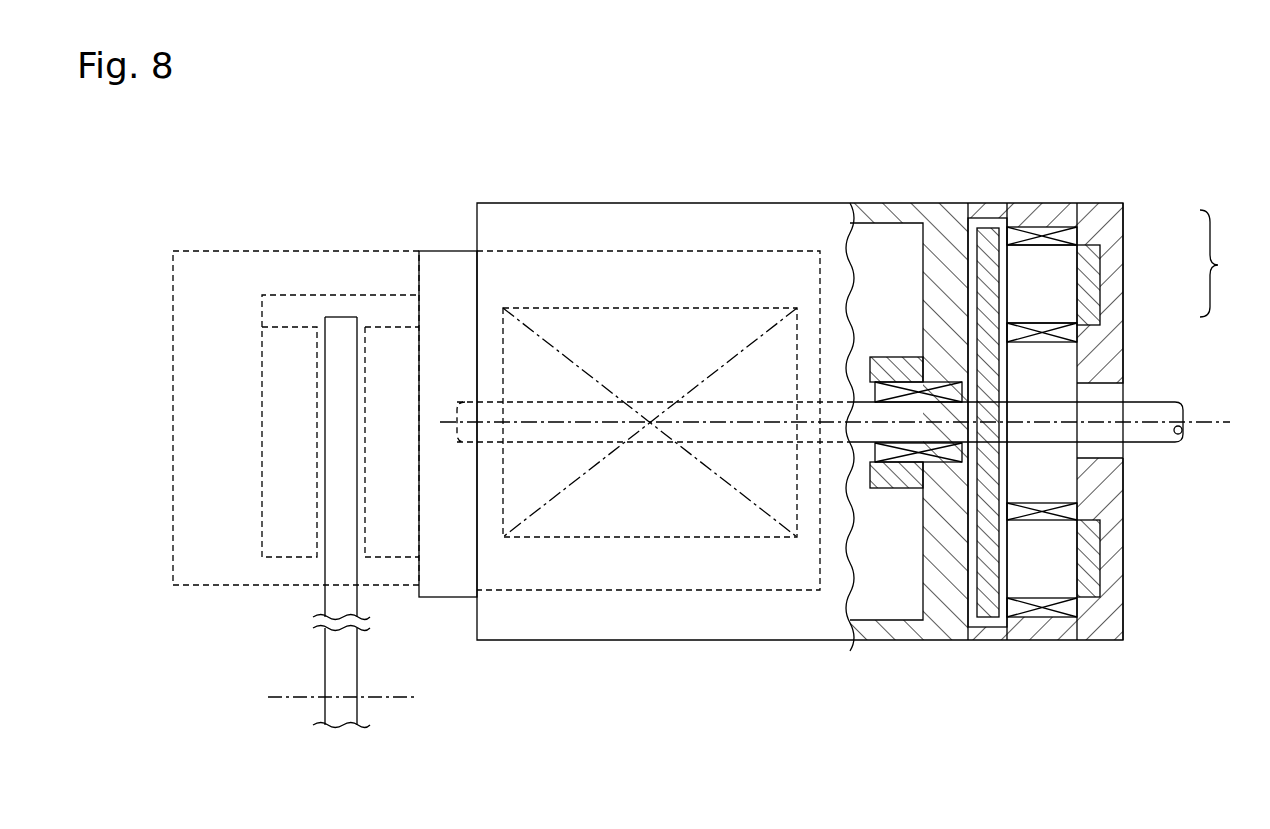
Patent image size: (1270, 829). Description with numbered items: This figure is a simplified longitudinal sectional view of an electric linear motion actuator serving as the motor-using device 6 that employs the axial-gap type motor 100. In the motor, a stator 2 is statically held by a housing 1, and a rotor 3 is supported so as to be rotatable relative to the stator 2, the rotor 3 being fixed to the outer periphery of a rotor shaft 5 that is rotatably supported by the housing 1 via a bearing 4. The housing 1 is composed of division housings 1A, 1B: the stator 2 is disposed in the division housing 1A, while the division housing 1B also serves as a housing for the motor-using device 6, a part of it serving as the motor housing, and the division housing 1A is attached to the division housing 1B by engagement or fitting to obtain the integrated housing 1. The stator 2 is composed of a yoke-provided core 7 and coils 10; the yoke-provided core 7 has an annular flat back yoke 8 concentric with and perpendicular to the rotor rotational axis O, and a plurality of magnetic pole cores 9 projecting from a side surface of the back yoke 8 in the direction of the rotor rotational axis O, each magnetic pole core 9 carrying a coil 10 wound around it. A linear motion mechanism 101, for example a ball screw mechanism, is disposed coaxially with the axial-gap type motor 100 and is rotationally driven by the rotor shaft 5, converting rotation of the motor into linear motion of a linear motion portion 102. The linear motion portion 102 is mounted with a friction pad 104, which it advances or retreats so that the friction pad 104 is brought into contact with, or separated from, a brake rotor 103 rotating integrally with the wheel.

The housing 1 is at (986, 482).
The division housing 1A is at (1062, 632).
The division housing 1B is at (945, 632).
The stator 2 is at (1053, 225).
The rotor 3 is at (987, 227).
The bearing 4 is at (903, 478).
The rotor shaft 5 is at (1148, 435).
The motor-using device 6 is at (783, 643).
The yoke-provided core 7 is at (1218, 263).
The back yoke 8 is at (1085, 283).
The magnetic pole core 9 is at (1053, 267).
The coil 10 is at (1028, 228).
The axial-gap type motor 100 is at (1122, 642).
The linear motion mechanism 101 is at (593, 307).
The linear motion portion 102 is at (450, 270).
The brake rotor 103 is at (333, 578).
The friction pad 104 is at (285, 488).
The rotor rotational axis O is at (1205, 422).